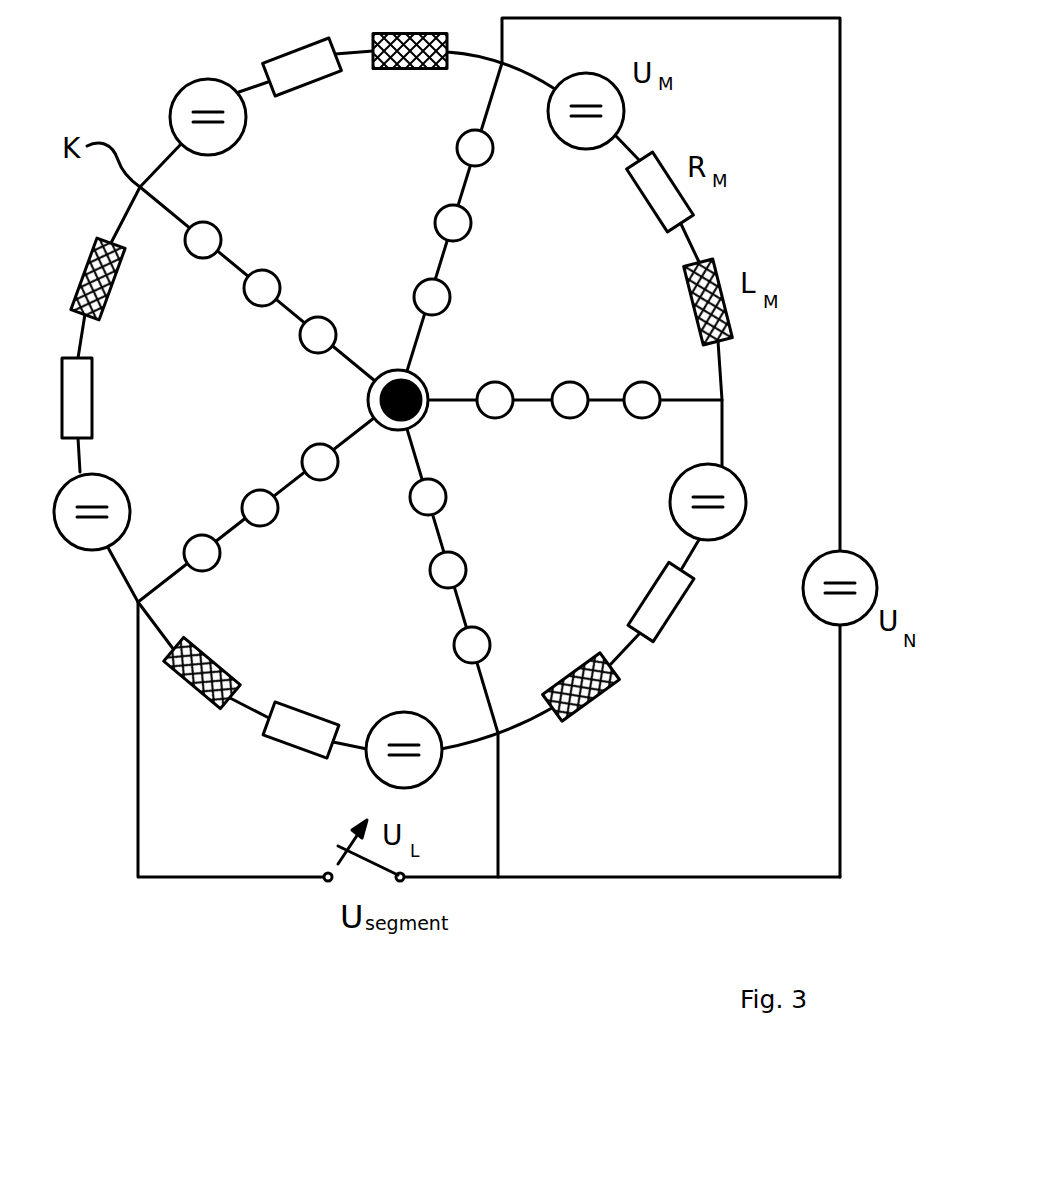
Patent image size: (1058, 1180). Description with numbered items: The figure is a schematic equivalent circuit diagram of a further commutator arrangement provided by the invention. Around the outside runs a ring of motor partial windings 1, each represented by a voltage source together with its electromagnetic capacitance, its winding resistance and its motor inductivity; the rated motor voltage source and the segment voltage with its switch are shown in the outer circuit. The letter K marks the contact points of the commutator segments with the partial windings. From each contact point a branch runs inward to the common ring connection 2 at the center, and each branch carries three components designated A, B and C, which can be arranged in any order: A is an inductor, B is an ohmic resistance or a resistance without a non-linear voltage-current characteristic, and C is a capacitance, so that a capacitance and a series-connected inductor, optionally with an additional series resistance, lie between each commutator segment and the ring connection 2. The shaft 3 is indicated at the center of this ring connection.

The motor partial winding 1 is at (724, 136).
The ring connection 2 is at (420, 378).
The shaft 3 is at (370, 394).